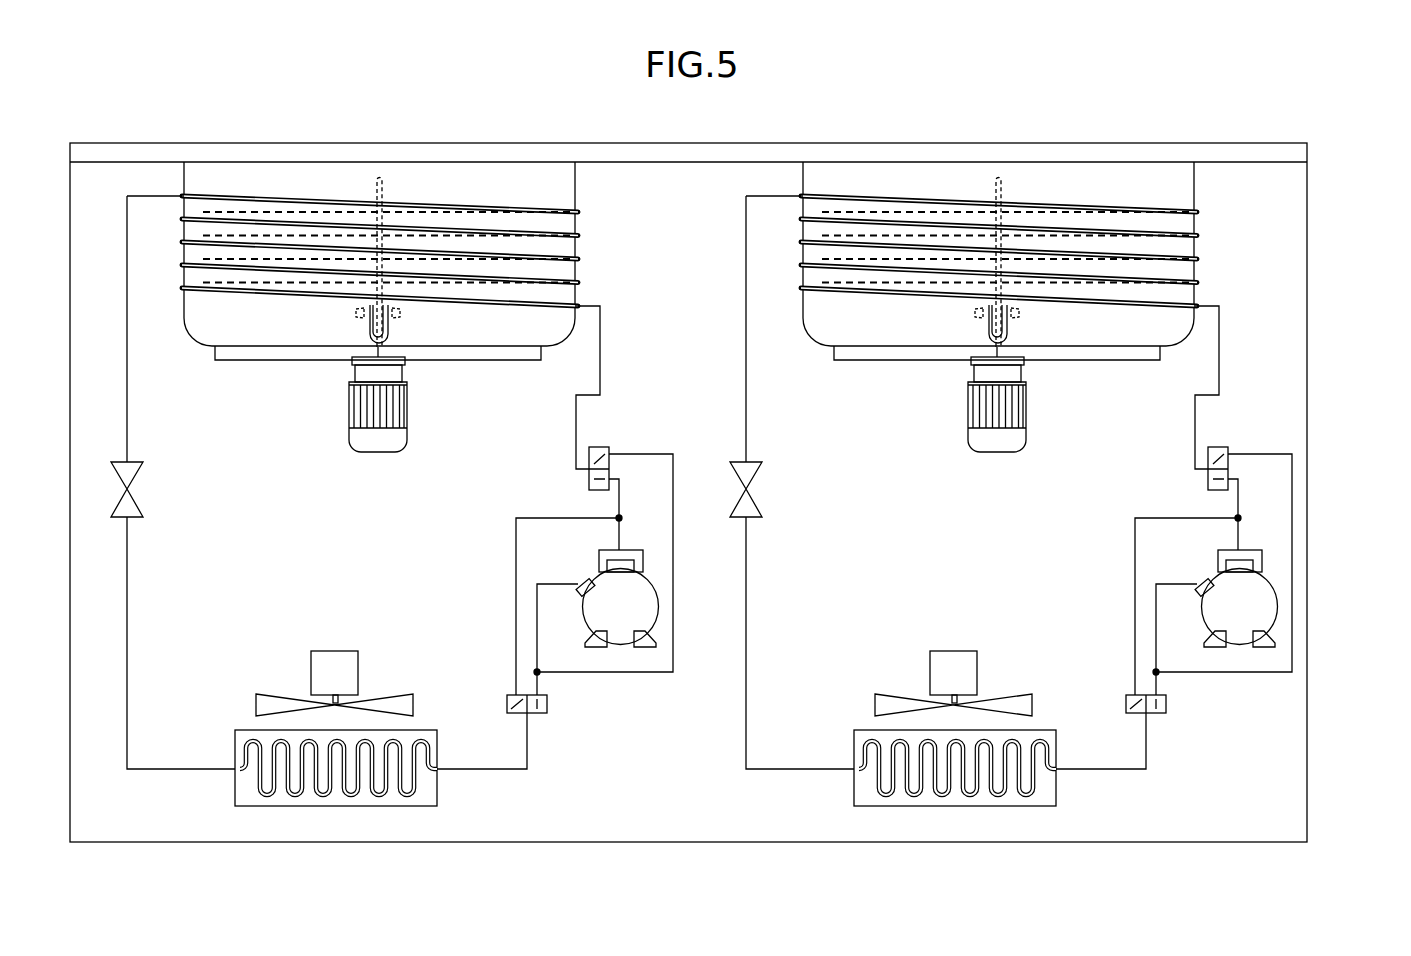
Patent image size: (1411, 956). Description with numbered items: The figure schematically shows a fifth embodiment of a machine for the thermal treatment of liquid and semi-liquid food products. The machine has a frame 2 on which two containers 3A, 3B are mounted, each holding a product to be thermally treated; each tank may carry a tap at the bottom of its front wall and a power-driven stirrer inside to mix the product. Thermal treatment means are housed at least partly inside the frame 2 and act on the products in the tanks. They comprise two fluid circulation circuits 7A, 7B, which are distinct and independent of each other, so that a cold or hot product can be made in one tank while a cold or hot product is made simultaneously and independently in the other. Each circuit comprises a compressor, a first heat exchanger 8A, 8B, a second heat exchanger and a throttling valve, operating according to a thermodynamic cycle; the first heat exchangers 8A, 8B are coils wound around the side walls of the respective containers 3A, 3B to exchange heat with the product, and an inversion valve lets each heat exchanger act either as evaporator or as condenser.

The frame 2 is at (1270, 793).
The container 3A is at (480, 182).
The container 3B is at (998, 221).
The fluid circulation circuit 7A is at (321, 777).
The fluid circulation circuit 7B is at (940, 777).
The first heat exchanger 8A is at (204, 196).
The first heat exchanger 8B is at (999, 169).